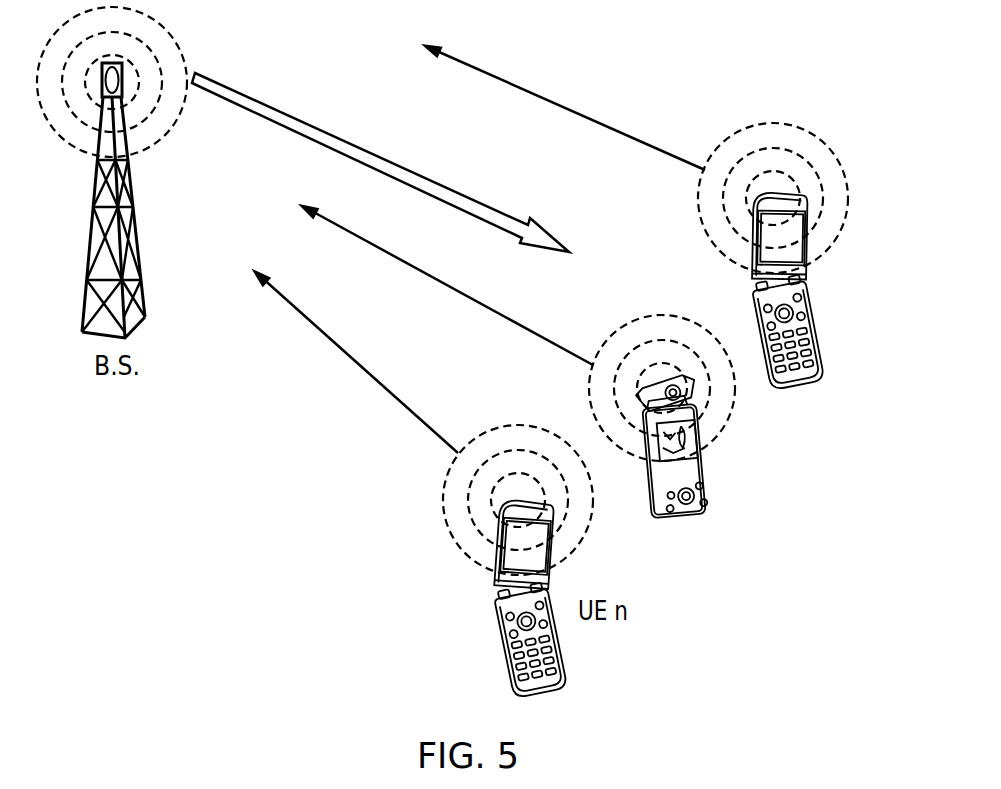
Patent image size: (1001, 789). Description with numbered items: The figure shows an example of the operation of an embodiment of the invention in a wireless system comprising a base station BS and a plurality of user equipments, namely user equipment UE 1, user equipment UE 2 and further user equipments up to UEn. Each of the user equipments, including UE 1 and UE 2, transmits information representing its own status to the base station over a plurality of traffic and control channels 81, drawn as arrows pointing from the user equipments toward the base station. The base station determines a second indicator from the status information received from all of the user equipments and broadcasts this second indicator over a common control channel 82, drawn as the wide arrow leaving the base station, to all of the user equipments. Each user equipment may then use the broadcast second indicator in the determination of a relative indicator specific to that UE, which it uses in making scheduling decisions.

The traffic and control channels 81 is at (584, 92).
The common control channel 82 is at (285, 98).
The user equipment UE1 1 is at (795, 256).
The user equipment UE2 2 is at (683, 417).